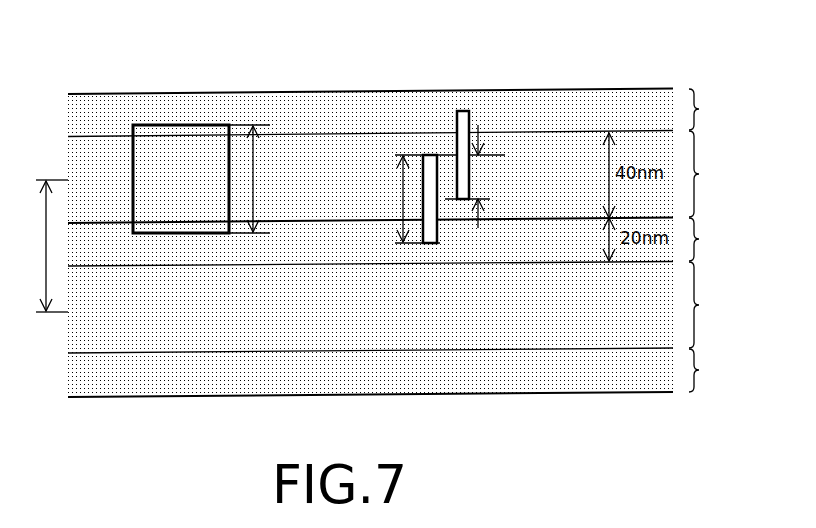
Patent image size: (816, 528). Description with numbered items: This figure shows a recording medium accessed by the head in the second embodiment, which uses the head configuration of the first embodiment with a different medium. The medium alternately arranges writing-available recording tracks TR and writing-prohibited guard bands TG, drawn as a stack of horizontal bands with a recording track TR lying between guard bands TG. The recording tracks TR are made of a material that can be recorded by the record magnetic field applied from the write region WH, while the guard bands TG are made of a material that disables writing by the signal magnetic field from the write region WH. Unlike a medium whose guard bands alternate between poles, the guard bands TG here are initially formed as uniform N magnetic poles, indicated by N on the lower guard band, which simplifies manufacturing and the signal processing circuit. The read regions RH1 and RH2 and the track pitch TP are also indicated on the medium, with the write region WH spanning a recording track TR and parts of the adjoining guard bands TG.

The write region WH is at (182, 140).
The read head width (first read head) RH1 is at (437, 154).
The read head width (second read head) RH2 is at (465, 111).
The track pitch TP is at (60, 246).
The guard band TG is at (710, 240).
The recording track TR is at (709, 239).
The N magnetic pole N is at (586, 370).